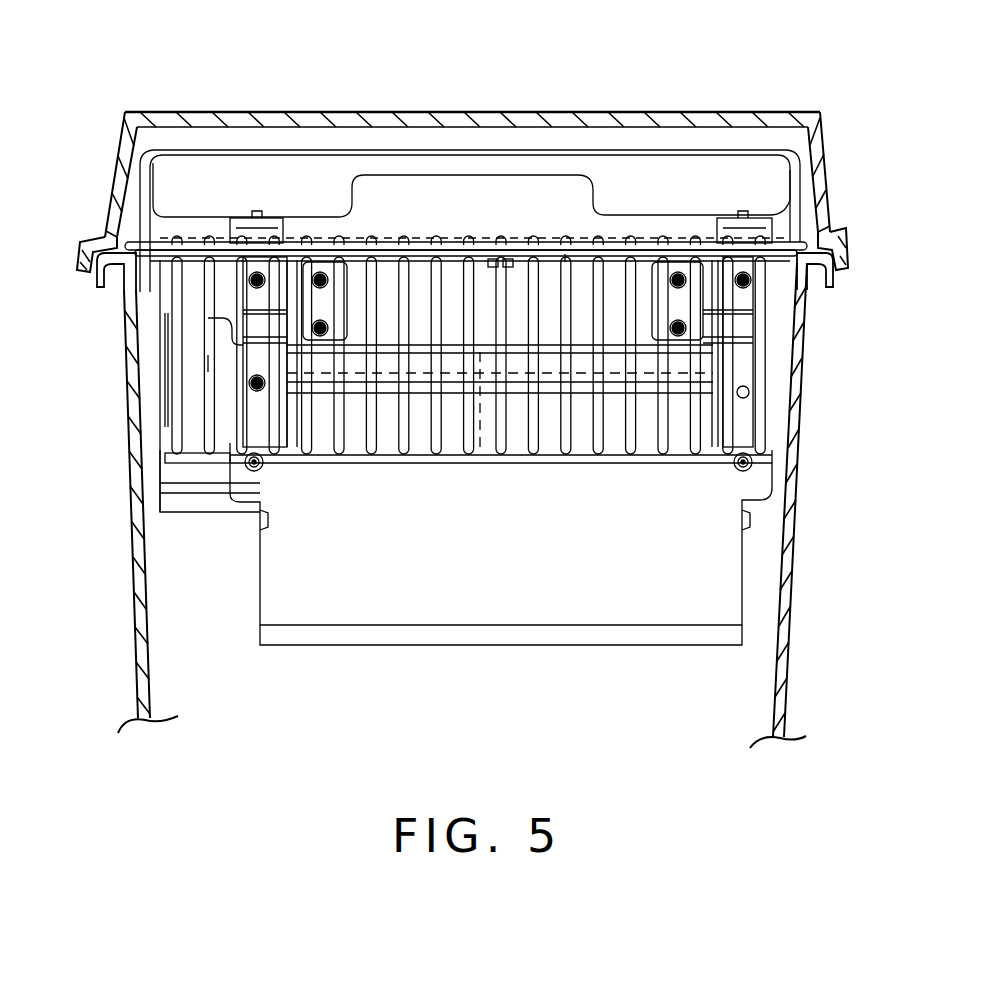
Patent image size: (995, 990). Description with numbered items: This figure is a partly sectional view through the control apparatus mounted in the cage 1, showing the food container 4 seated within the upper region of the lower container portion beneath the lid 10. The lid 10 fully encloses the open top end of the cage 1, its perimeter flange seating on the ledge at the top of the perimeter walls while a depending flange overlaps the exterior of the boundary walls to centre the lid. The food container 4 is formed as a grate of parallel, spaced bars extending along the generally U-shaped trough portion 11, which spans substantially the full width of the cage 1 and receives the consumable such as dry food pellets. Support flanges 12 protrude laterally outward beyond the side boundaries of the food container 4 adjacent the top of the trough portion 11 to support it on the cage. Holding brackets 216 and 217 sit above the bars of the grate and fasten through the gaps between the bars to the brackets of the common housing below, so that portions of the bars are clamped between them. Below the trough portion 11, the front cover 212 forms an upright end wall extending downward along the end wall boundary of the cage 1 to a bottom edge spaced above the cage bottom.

The cage 1 is at (140, 557).
The food container 4 is at (196, 362).
The lid 10 is at (436, 118).
The trough portion 11 is at (566, 240).
The support flanges 12 is at (122, 243).
The front cover 212 is at (446, 612).
The holding bracket 216 is at (742, 372).
The holding bracket 217 is at (253, 402).